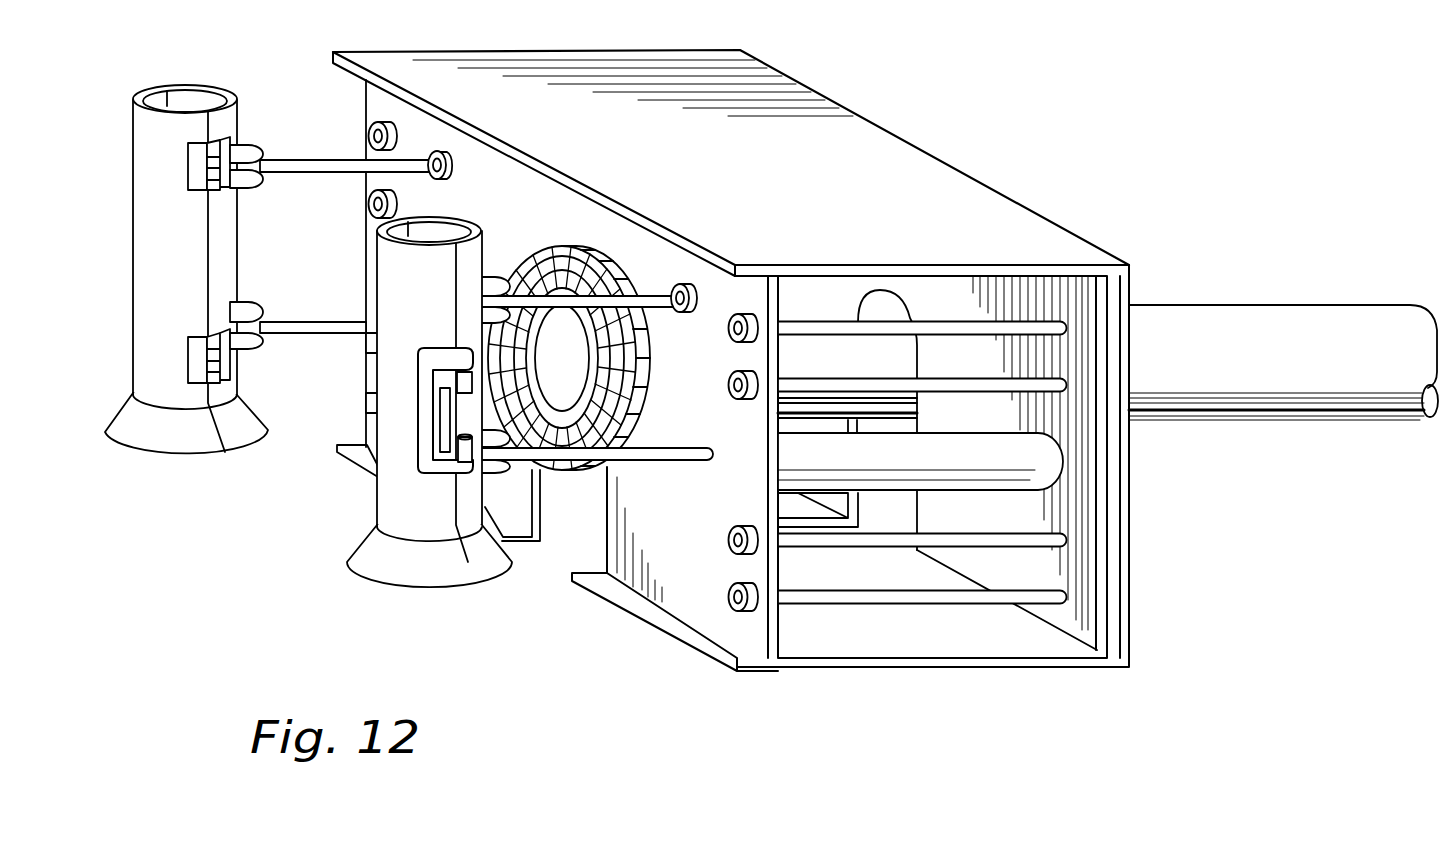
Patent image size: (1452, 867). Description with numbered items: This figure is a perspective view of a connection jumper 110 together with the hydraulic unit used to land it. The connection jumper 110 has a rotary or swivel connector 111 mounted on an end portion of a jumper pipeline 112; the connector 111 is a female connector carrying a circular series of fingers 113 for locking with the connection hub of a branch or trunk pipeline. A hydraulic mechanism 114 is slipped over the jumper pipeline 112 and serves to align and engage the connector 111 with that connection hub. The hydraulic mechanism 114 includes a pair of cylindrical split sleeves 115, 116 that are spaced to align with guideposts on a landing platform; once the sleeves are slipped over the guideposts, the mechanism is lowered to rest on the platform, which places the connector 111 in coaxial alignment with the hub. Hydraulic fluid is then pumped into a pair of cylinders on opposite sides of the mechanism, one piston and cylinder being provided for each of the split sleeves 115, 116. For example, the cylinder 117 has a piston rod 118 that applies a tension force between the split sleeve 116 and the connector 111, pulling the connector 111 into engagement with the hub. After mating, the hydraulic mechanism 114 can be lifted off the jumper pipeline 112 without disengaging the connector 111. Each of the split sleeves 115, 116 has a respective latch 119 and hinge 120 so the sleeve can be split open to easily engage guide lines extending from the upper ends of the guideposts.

The connection jumper 110 is at (771, 360).
The rotary or swivel connector 111 is at (533, 260).
The jumper pipeline 112 is at (1303, 305).
The fingers 113 is at (600, 387).
The hydraulic mechanism 114 is at (926, 186).
The cylindrical split sleeve 115 is at (181, 444).
The cylindrical split sleeve 116 is at (432, 572).
The cylinder 117 is at (793, 453).
The piston rod 118 is at (660, 465).
The latch 119 is at (418, 477).
The hinge 120 is at (197, 183).